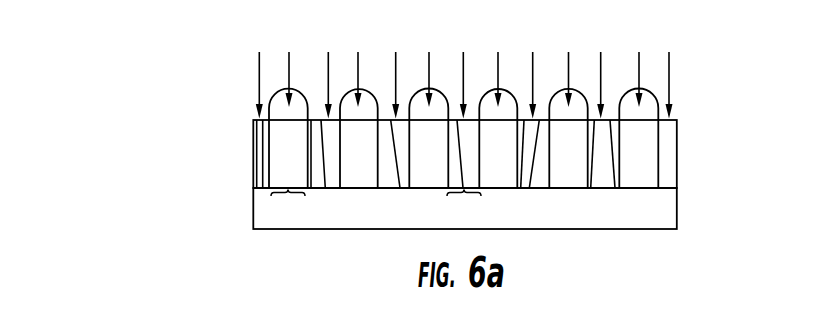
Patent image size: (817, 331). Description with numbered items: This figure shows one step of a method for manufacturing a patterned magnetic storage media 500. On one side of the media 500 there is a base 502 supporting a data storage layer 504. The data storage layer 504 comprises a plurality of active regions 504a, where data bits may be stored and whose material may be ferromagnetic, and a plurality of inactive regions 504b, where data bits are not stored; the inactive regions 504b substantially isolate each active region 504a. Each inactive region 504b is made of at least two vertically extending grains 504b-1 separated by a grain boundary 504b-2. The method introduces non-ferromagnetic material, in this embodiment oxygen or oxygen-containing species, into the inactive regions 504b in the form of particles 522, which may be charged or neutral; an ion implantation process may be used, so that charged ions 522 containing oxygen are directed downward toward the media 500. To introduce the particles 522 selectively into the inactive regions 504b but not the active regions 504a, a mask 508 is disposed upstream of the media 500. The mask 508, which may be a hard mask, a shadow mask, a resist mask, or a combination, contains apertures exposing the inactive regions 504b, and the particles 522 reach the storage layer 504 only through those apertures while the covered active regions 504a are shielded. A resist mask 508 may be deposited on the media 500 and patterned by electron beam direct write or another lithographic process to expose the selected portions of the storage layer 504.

The patterned magnetic storage media 500 is at (112, 62).
The base 502 is at (350, 212).
The data storage layer 504 is at (220, 163).
The active regions 504a is at (285, 209).
The inactive regions 504b is at (464, 209).
The vertically extending grains 504b-1 is at (606, 180).
The grain boundary 504b-2 is at (615, 164).
The mask 508 is at (280, 106).
The particles 522 is at (259, 67).